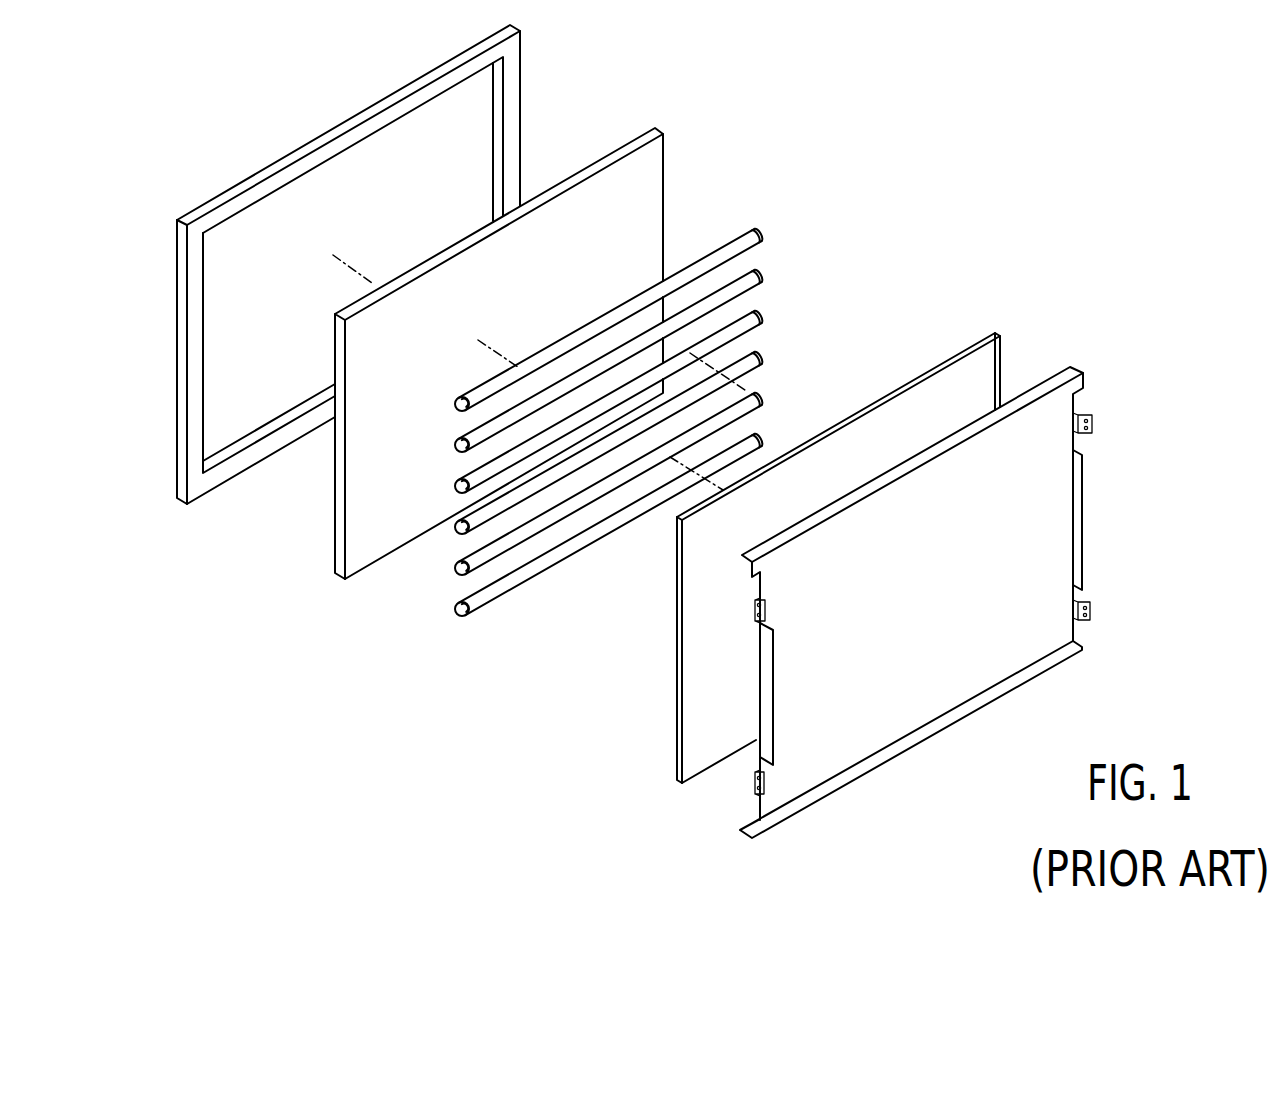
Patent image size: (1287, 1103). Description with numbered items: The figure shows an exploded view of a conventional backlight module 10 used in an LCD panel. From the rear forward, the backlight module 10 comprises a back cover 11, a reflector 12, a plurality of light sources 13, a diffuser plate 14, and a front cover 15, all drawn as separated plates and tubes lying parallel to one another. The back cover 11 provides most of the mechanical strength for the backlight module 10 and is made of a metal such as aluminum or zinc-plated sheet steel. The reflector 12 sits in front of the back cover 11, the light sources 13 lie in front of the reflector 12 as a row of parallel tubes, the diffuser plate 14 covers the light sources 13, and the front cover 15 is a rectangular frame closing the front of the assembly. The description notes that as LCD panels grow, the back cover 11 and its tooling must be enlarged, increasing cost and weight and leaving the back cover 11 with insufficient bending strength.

The backlight module 10 is at (926, 202).
The back cover 11 is at (1076, 487).
The reflector 12 is at (995, 368).
The light sources 13 is at (752, 276).
The diffuser plate 14 is at (660, 188).
The front cover 15 is at (520, 103).